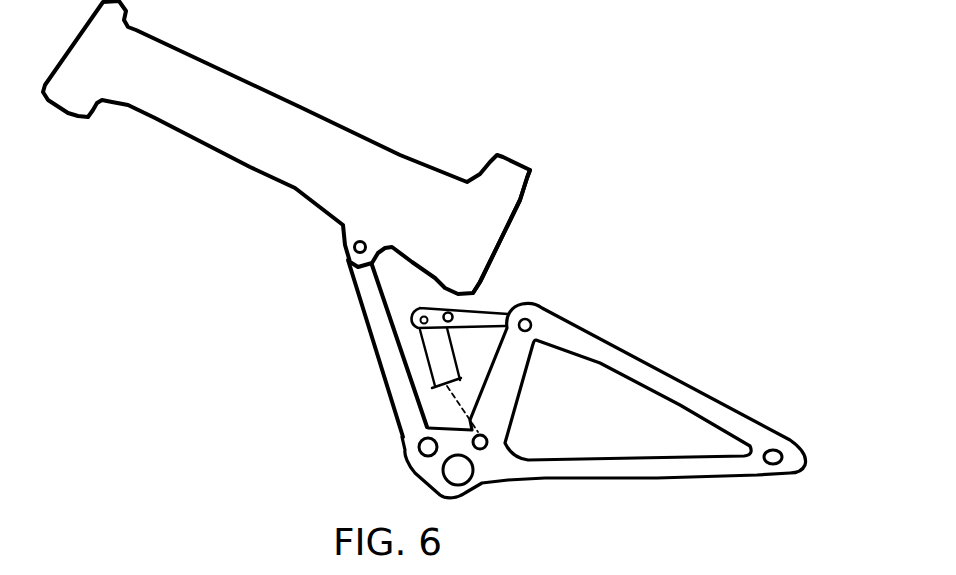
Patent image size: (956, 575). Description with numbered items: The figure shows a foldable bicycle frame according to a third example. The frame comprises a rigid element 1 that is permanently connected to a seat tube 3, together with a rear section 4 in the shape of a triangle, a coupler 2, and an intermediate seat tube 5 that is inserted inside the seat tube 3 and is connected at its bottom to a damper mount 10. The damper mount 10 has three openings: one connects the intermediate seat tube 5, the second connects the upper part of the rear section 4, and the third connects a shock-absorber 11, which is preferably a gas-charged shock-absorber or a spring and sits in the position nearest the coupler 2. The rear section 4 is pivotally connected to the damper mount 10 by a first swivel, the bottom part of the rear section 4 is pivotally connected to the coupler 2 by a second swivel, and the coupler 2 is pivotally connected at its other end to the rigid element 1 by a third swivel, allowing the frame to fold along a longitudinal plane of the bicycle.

The rigid element 1 is at (305, 109).
The coupler 2 is at (388, 393).
The seat tube 3 is at (520, 207).
The rear section 4 is at (678, 364).
The intermediate seat tube 5 is at (438, 300).
The damper mount 10 is at (490, 310).
The shock-absorber 11 is at (433, 365).